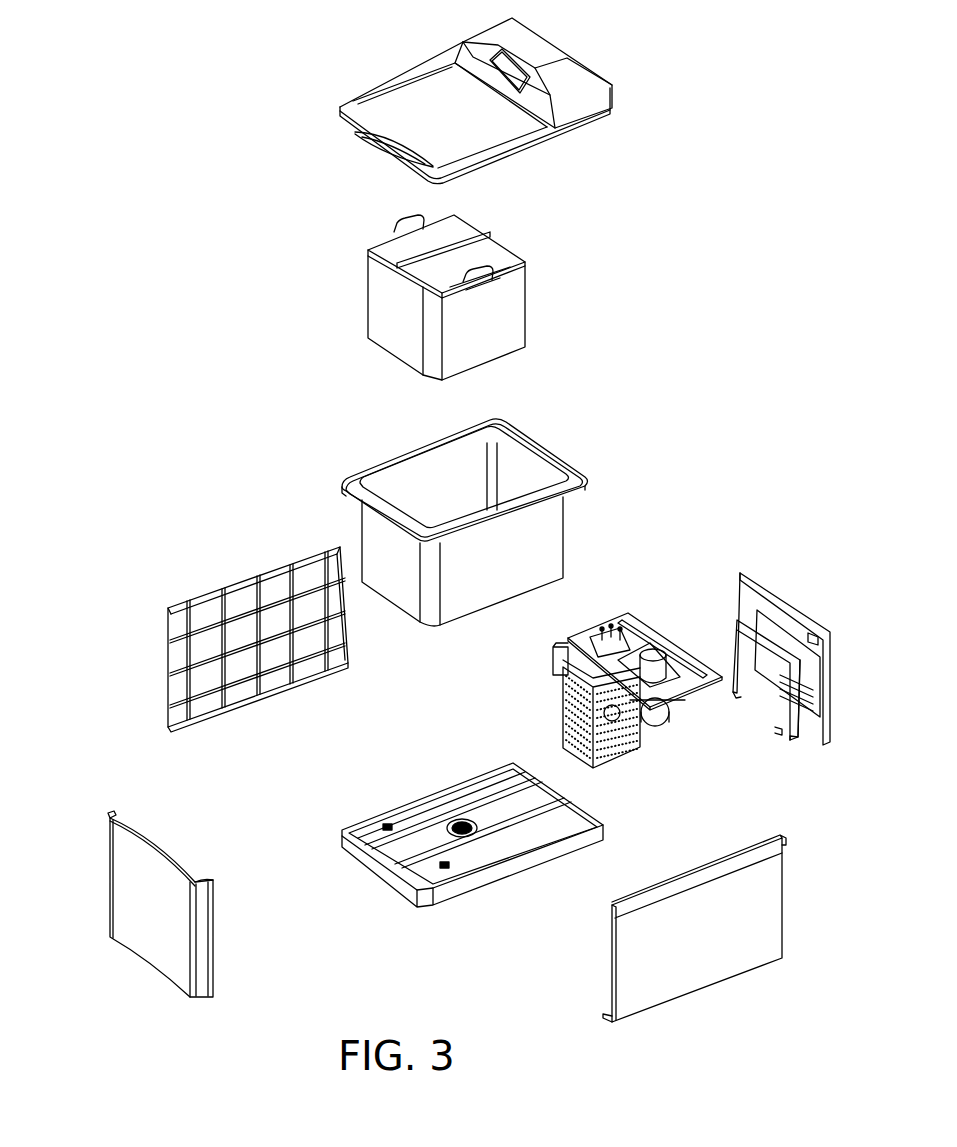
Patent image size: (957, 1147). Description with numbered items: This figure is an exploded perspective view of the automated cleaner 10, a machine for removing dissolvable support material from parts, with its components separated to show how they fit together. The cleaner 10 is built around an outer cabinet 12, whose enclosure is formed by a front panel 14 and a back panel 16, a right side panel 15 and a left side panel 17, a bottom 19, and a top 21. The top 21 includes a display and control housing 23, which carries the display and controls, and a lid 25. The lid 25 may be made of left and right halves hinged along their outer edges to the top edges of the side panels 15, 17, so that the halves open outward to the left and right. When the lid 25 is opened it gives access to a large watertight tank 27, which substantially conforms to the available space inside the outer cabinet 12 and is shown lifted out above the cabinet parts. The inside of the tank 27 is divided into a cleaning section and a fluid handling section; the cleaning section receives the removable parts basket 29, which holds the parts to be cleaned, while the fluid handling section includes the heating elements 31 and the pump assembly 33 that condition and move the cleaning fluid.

The automated cleaner 10 is at (164, 90).
The outer cabinet 12 is at (130, 712).
The front panel 14 is at (160, 942).
The right side panel 15 is at (782, 895).
The back panel 16 is at (802, 610).
The left side panel 17 is at (235, 580).
The bottom 19 is at (393, 880).
The top 21 is at (366, 63).
The display and control housing 23 is at (547, 47).
The lid 25 is at (393, 113).
The watertight tank 27 is at (543, 443).
The removable parts basket 29 is at (360, 307).
The heating elements 31 is at (608, 627).
The pump assembly 33 is at (692, 763).